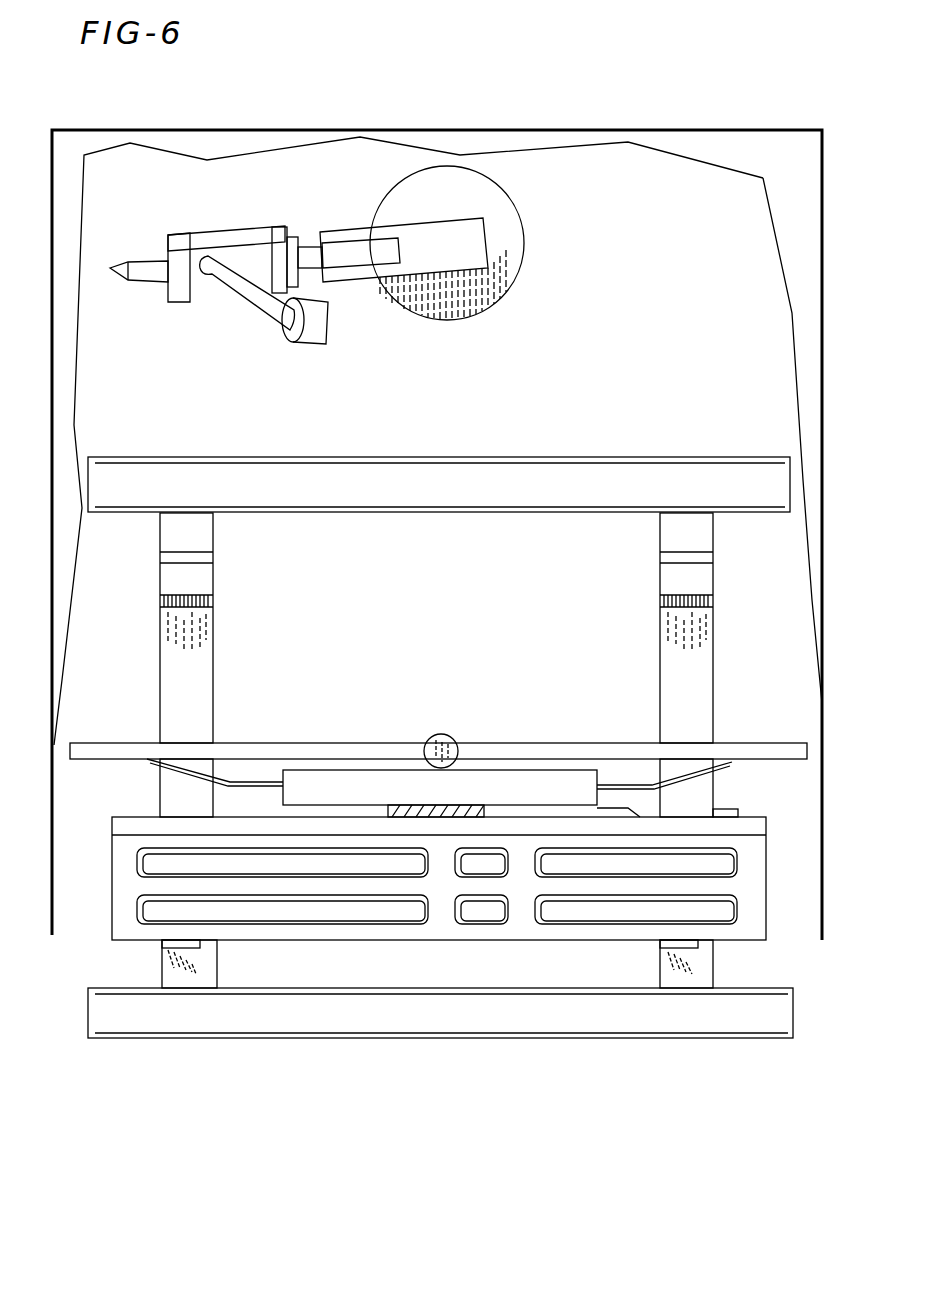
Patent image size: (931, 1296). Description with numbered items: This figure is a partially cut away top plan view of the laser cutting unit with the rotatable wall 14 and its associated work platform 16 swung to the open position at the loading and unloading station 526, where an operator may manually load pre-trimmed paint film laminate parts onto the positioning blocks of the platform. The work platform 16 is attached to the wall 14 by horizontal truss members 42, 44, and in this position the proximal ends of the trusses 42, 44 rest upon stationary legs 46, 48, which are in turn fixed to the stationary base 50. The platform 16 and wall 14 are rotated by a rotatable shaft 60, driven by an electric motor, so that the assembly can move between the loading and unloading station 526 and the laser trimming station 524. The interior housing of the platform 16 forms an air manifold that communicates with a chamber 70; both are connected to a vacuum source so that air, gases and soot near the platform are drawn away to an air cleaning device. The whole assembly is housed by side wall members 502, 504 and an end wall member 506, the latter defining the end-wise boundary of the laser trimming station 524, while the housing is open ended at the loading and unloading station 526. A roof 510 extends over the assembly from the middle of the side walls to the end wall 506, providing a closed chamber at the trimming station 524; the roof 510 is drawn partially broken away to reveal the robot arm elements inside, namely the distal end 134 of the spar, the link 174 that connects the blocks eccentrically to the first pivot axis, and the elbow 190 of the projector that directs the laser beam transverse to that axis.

The end wall member 506 is at (610, 130).
The roof 510 is at (58, 178).
The side wall member 502 is at (52, 579).
The side wall member 504 is at (821, 640).
The laser trimming station 524 is at (660, 276).
The link 174 is at (232, 233).
The distal end 134 is at (332, 235).
The elbow 190 is at (201, 284).
The stationary base 50 is at (464, 460).
The horizontal truss member 42 is at (214, 688).
The horizontal truss member 44 is at (660, 650).
The wall 14 is at (578, 744).
The rotatable shaft 60 is at (446, 740).
The chamber 70 is at (360, 782).
The work platform 16 is at (440, 922).
The stationary leg 46 is at (162, 944).
The stationary leg 48 is at (713, 948).
The loading and unloading station 526 is at (153, 1052).